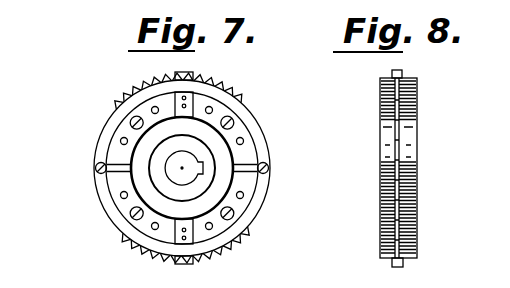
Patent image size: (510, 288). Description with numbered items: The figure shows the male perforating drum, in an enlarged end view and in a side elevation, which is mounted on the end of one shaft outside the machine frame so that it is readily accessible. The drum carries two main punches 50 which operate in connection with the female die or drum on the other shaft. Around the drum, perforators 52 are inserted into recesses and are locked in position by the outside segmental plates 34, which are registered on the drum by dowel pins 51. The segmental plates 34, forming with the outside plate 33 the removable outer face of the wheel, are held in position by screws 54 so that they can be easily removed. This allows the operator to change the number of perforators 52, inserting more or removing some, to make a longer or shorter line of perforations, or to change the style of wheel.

In FIG. 7, the outside plate 33 is at (107, 137).
In FIG. 8, the outside plate 33 is at (380, 199).
In FIG. 7, the outside segmental plate 34 is at (100, 156).
In FIG. 8, the outside segmental plate 34 is at (498, 188).
In FIG. 7, the main punch 50 is at (188, 265).
In FIG. 8, the main punch 50 is at (403, 262).
In FIG. 7, the dowel pin 51 is at (119, 140).
In FIG. 8, the dowel pin 51 is at (504, 110).
In FIG. 7, the perforator 52 is at (244, 96).
In FIG. 8, the perforator 52 is at (398, 167).
In FIG. 7, the screw 54 is at (235, 123).
In FIG. 8, the screw 54 is at (498, 231).